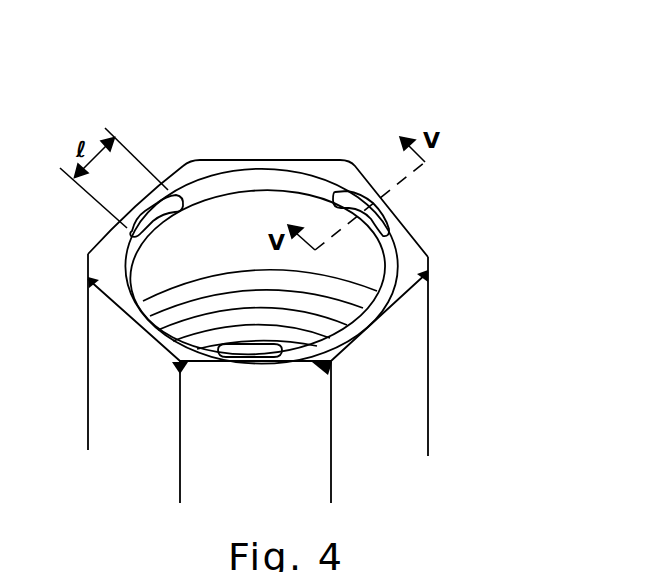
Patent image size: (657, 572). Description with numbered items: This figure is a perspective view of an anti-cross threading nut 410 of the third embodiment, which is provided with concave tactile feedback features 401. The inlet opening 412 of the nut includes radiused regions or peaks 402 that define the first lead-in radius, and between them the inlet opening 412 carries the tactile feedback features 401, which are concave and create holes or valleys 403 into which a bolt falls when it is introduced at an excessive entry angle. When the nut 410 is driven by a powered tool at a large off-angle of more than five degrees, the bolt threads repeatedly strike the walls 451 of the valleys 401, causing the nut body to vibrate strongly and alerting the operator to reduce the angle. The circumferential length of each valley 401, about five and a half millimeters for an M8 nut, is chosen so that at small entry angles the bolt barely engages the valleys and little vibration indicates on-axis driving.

The anti-cross threading nut 410 is at (348, 76).
The inlet opening 412 is at (320, 179).
The radiused regions or peaks 402 is at (240, 183).
The tactile feedback features 401 is at (165, 203).
The holes or valleys 403 is at (253, 357).
The walls of valleys 451 is at (180, 361).